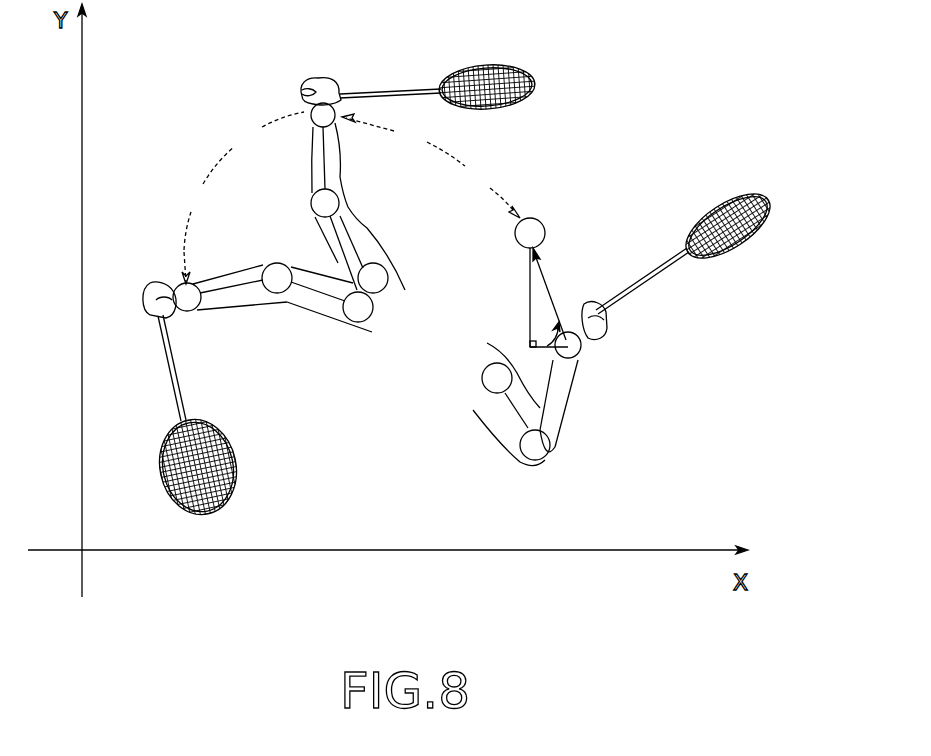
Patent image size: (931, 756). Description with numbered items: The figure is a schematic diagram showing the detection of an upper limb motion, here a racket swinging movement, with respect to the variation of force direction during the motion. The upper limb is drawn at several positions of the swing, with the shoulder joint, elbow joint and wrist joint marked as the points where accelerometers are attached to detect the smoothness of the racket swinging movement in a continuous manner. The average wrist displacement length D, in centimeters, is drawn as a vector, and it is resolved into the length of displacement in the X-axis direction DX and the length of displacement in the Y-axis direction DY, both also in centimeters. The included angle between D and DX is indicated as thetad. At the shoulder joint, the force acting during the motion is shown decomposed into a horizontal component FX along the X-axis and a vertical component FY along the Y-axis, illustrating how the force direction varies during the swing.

The vertical force component FY is at (520, 220).
The horizontal force component FX is at (520, 220).
The average wrist displacement length D is at (563, 298).
The length of displacement in Y-axis direction DY is at (530, 291).
The length of displacement in X-axis direction DX is at (572, 367).
The included angle between D and Dx thetad is at (540, 324).